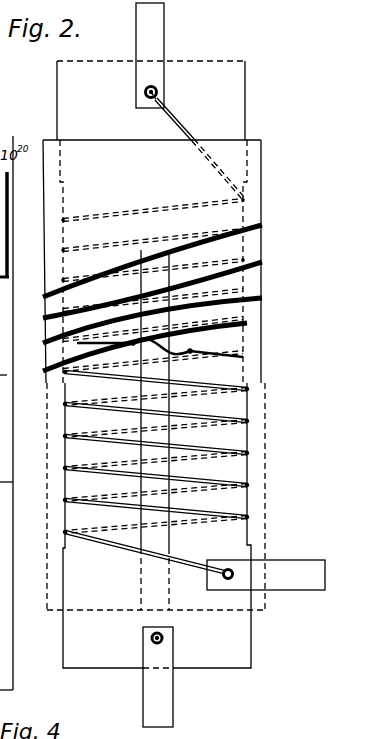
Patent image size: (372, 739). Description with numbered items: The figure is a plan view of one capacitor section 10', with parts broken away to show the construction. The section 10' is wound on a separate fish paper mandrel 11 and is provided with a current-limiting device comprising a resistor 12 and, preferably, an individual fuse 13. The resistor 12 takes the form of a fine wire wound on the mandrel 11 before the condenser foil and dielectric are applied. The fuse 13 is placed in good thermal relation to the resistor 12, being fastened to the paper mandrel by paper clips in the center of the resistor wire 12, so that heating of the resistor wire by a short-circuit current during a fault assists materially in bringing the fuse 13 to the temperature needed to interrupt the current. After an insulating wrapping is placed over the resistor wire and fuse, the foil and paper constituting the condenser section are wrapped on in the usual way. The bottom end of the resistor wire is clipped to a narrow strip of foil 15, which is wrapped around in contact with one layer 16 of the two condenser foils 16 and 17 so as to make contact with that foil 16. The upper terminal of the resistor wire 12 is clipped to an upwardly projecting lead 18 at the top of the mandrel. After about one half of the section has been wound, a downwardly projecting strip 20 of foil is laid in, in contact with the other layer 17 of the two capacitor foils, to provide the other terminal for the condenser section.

The capacitor section 10' is at (167, 386).
The fish paper mandrel 11 is at (236, 76).
The resistor 12 is at (176, 120).
The fuse 13 is at (185, 356).
The strip of foil 15 is at (298, 589).
The condenser foil 16 is at (263, 288).
The condenser foil 17 is at (262, 256).
The lead 18 is at (160, 32).
The strip of foil 20 is at (168, 701).